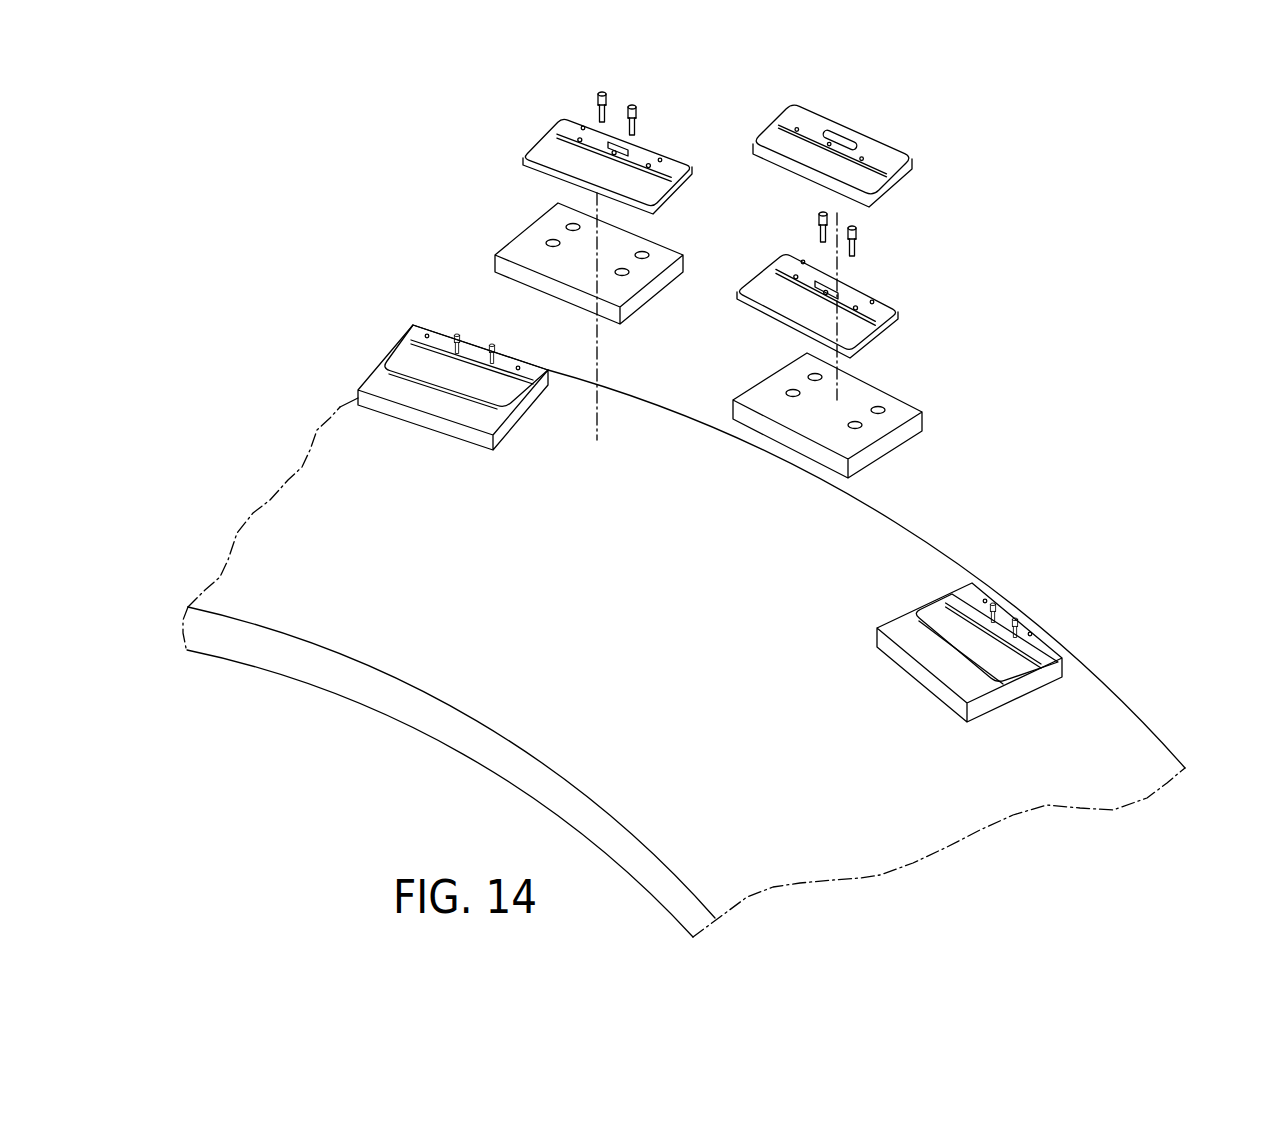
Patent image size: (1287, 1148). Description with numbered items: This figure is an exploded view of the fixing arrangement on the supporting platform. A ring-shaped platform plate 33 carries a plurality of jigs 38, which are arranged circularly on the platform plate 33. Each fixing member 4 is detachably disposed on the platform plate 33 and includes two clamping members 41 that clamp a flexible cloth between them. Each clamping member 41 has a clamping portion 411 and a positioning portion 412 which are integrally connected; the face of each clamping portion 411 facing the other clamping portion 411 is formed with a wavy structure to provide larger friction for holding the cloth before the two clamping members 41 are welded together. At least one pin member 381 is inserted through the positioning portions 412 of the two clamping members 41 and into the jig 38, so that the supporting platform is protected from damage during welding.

The fixing member 4 is at (905, 118).
The clamping member 41 is at (909, 257).
The clamping portion 411 is at (863, 187).
The positioning portion 412 is at (905, 152).
The jig 38 is at (882, 427).
The pin member 381 is at (636, 112).
The platform plate 33 is at (1102, 713).